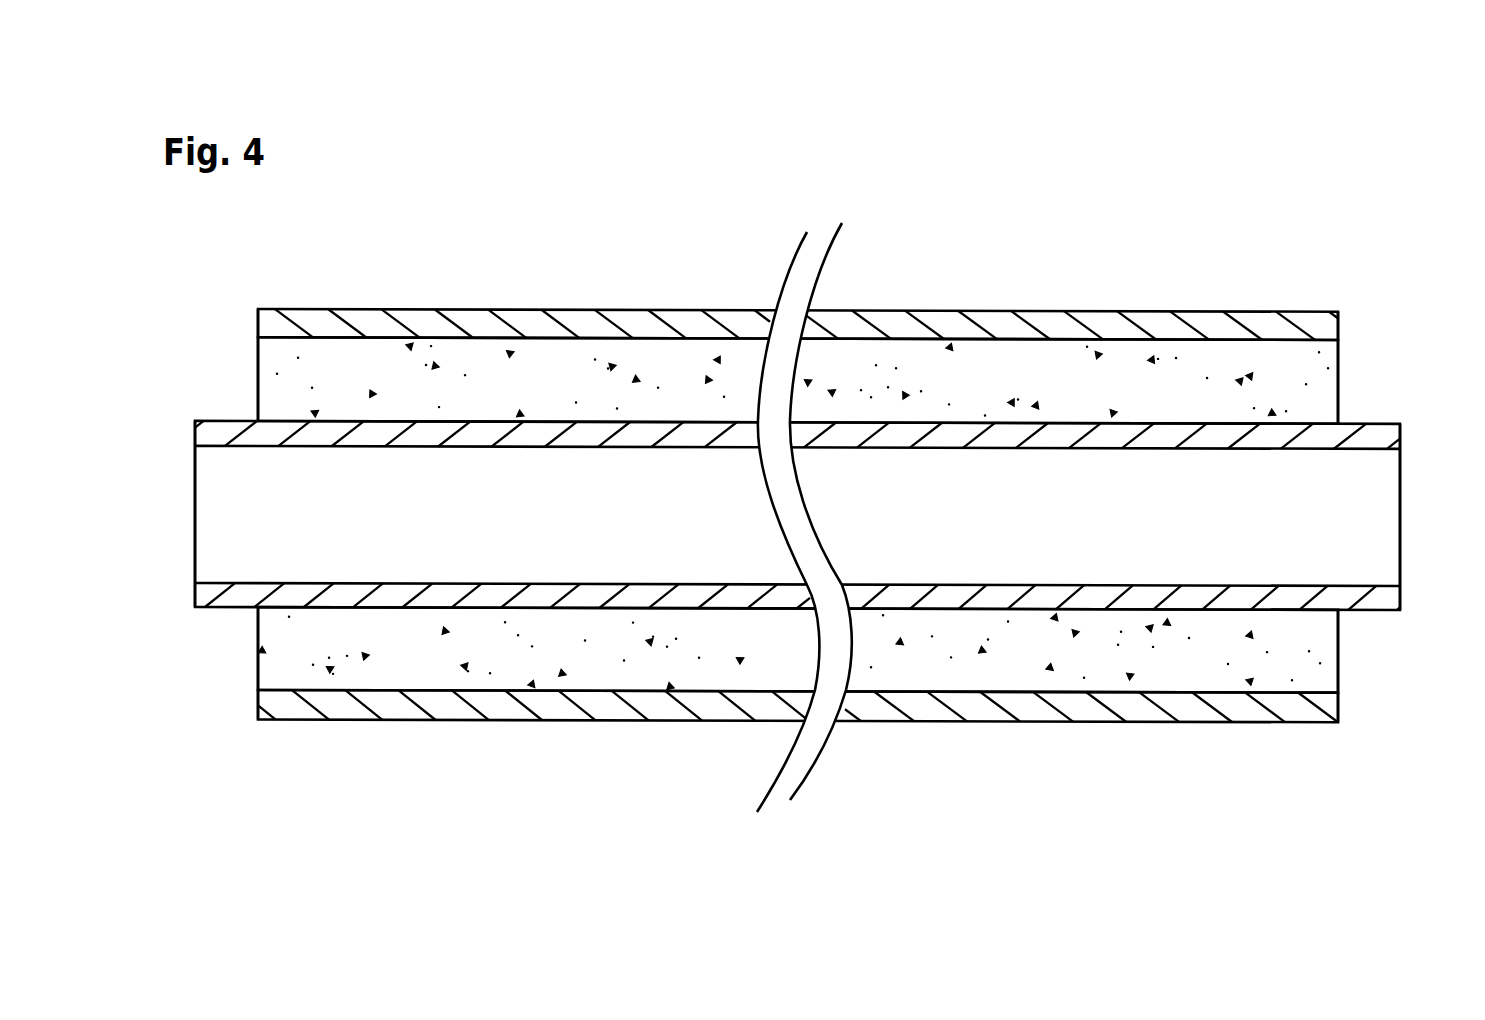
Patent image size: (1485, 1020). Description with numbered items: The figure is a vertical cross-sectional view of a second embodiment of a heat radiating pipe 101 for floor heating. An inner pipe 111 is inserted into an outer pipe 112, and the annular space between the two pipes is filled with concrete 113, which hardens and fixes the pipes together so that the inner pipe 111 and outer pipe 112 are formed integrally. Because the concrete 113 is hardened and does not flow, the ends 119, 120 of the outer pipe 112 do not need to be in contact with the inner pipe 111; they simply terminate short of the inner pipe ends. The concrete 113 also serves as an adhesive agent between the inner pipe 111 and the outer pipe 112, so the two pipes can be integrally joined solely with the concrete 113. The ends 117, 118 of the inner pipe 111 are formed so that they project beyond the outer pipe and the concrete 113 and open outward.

The composite tube assembly 101 is at (786, 437).
The inner pipe 111 is at (298, 420).
The outer pipe 112 is at (520, 307).
The concrete 113 is at (718, 362).
The end of inner pipe 117 is at (197, 607).
The end of inner pipe 118 is at (1397, 610).
The end of outer pipe 119 is at (260, 719).
The end of outer pipe 120 is at (1332, 723).